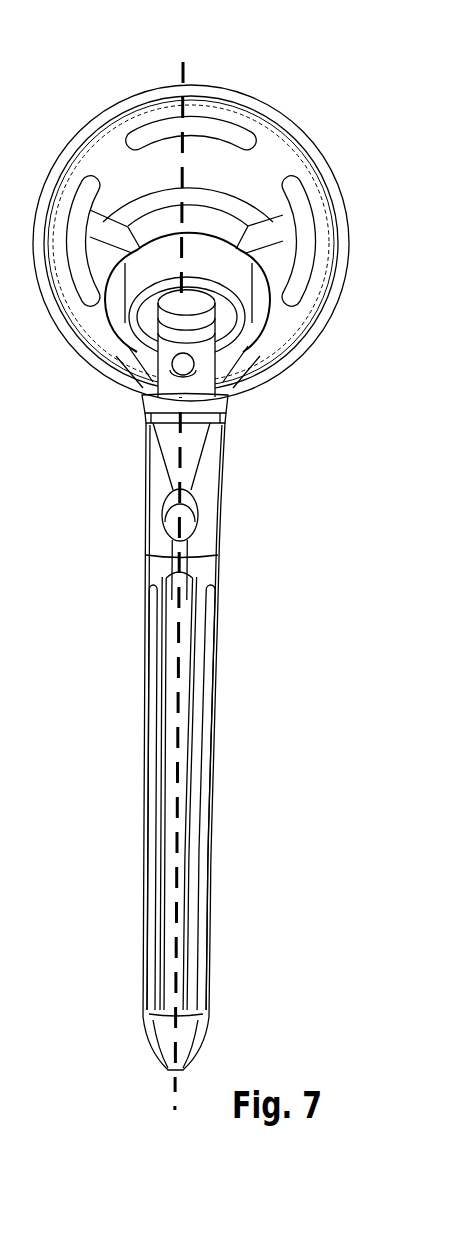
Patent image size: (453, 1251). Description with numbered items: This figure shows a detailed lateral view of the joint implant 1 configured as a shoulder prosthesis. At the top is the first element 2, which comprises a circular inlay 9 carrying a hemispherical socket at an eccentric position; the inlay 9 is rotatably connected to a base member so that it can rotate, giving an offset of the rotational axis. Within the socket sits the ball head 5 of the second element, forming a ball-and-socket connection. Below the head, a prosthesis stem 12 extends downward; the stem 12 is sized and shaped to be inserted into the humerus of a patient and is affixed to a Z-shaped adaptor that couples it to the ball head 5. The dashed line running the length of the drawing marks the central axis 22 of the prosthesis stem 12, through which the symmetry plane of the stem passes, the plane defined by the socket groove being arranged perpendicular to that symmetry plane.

The joint implant 1 is at (276, 89).
The first element 2 is at (278, 385).
The ball head 5 is at (213, 267).
The circular inlay 9 is at (108, 170).
The prosthesis stem 12 is at (153, 630).
The central axis 22 is at (180, 70).